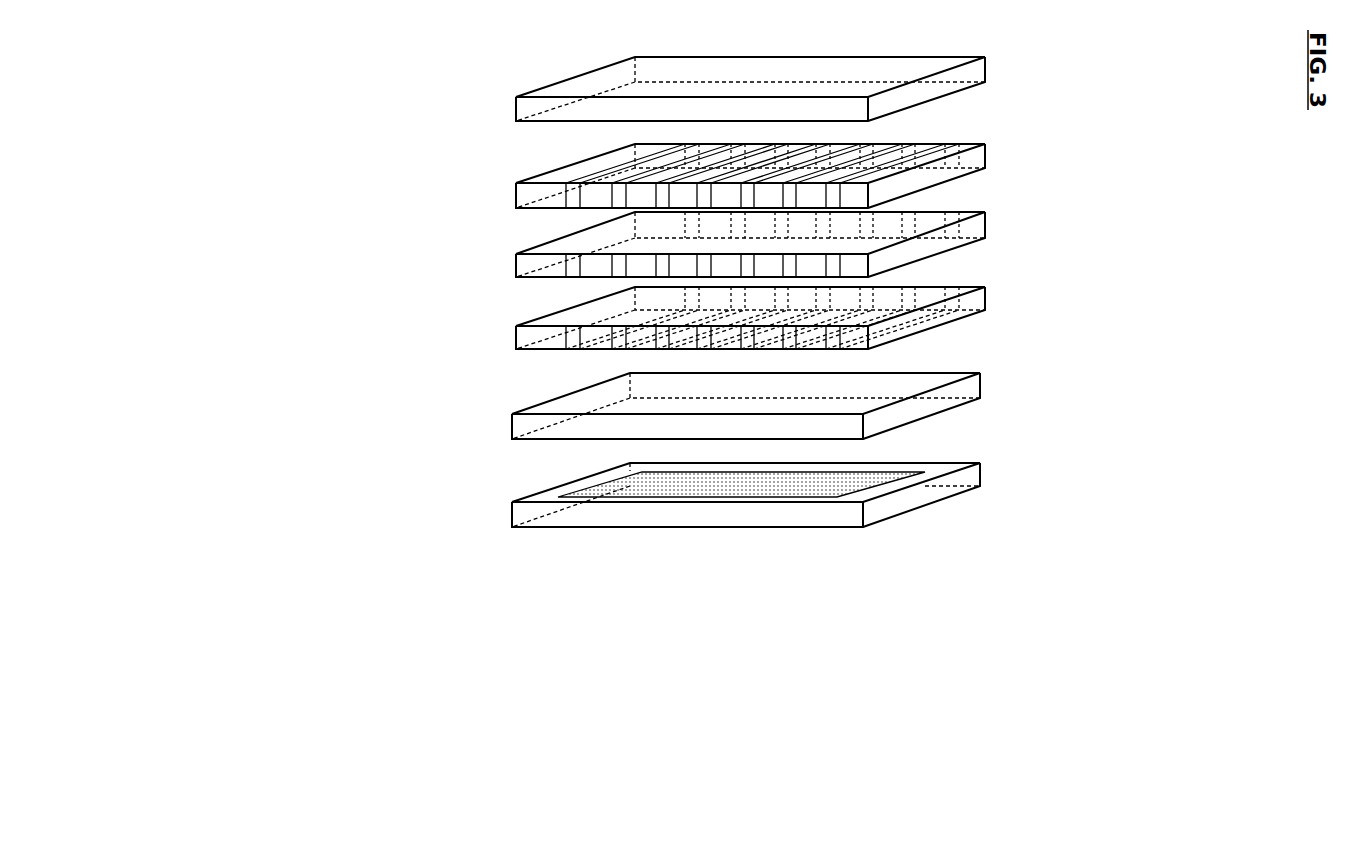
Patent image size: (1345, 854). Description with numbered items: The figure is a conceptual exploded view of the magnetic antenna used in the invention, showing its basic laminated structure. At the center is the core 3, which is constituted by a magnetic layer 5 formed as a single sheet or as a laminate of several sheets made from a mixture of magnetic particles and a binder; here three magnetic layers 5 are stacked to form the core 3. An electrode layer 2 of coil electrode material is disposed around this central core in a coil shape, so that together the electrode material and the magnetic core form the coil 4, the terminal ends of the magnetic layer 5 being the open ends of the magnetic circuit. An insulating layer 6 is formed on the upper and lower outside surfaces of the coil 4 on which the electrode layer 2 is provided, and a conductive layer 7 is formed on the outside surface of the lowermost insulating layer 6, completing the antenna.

The electrode layer 2 is at (906, 143).
The core 3 is at (233, 187).
The coil 4 is at (995, 133).
The magnetic layer 5 is at (485, 339).
The insulating layer 6 is at (484, 514).
The conductive layer 7 is at (624, 482).